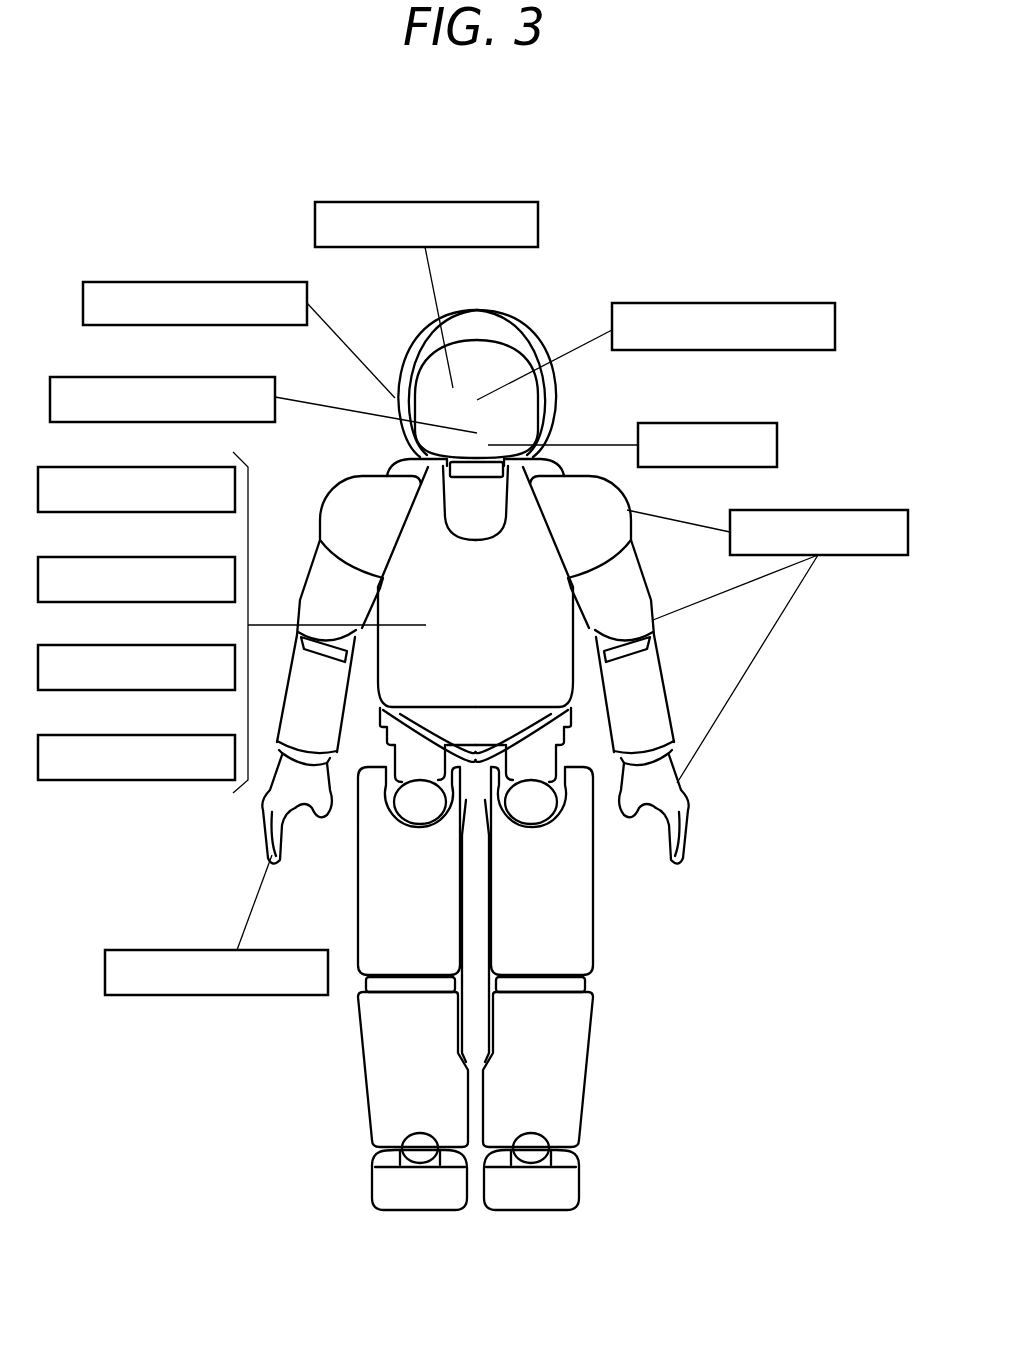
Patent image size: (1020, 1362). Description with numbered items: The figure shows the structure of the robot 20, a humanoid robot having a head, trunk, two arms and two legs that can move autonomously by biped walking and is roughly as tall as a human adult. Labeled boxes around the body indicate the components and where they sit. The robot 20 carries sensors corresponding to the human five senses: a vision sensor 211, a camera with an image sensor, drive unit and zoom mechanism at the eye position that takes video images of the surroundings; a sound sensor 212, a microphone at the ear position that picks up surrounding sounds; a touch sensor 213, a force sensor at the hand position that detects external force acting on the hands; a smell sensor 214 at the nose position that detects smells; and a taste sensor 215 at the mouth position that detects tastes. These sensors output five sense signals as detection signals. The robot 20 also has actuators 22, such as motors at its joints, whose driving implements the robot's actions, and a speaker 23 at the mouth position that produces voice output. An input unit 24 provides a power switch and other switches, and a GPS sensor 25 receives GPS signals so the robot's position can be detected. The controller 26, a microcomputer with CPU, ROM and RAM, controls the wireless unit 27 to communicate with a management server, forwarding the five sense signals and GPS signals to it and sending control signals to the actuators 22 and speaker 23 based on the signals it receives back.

The robot 20 is at (620, 231).
The vision sensor 211 is at (515, 202).
The sound sensor 212 is at (277, 282).
The touch sensor 213 is at (127, 950).
The smell sensor 214 is at (783, 303).
The taste sensor 215 is at (233, 377).
The actuator 22 is at (888, 510).
The speaker 23 is at (777, 440).
The input unit 24 is at (185, 467).
The GPS sensor 25 is at (185, 557).
The controller 26 is at (185, 645).
The wireless unit 27 is at (185, 735).